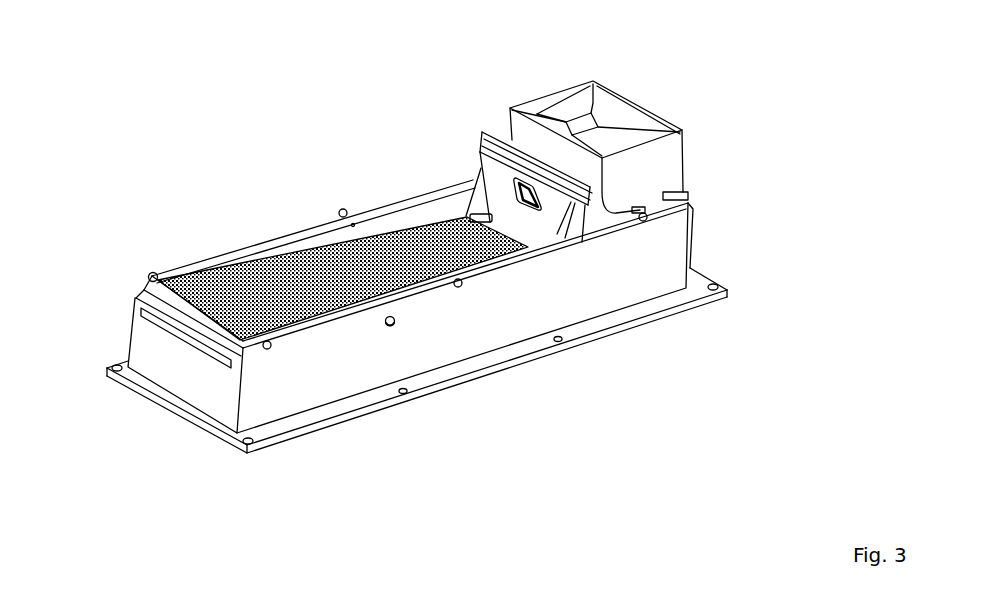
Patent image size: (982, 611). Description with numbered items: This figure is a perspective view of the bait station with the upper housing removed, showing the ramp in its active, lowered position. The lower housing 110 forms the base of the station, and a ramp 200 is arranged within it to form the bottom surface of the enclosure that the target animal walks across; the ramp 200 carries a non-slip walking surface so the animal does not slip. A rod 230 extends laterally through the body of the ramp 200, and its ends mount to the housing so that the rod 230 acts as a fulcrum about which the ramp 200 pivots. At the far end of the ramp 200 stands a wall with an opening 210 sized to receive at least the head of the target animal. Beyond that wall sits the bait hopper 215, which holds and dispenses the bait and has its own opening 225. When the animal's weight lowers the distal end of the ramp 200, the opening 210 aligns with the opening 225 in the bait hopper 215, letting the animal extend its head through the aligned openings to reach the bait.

The lower housing 110 is at (337, 367).
The ramp 200 is at (147, 285).
The opening 210 is at (522, 190).
The bait hopper 215 is at (620, 111).
The opening in the bait hopper 225 is at (532, 190).
The rod 230 is at (392, 325).